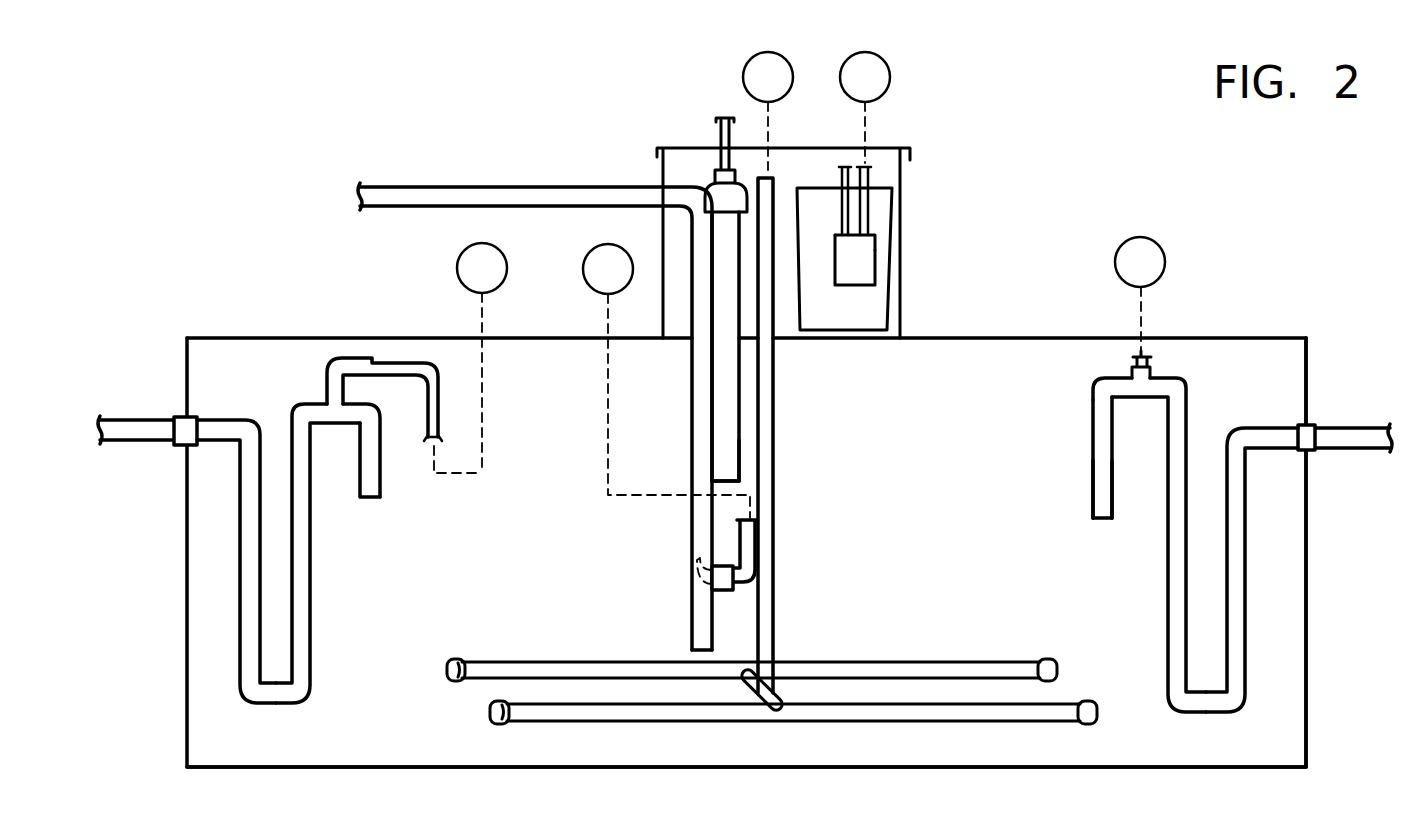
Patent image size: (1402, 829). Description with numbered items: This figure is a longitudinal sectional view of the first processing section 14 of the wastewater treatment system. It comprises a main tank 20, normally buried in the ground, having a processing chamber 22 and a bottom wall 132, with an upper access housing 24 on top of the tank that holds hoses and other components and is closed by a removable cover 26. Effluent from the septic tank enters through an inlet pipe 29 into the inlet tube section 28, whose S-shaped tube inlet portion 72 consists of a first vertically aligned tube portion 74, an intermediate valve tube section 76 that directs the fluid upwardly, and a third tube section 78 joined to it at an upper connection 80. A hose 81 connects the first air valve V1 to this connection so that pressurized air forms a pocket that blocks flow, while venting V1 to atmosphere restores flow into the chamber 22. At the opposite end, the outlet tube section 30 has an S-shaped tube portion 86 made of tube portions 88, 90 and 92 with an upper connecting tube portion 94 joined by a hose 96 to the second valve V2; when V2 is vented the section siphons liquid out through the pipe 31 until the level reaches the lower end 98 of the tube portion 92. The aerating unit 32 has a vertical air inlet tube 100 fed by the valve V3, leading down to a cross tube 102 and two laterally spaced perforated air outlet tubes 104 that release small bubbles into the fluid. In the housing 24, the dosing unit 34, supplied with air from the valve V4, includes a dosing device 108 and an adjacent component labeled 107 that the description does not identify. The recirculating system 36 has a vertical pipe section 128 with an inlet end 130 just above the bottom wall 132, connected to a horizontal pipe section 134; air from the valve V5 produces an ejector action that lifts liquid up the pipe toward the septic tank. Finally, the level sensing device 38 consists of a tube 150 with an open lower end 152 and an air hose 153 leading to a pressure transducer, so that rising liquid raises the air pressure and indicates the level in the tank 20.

The first processing section 14 is at (1250, 215).
The main tank 20 is at (1250, 330).
The processing chamber 22 is at (1262, 360).
The upper access housing 24 is at (900, 190).
The removable cover 26 is at (882, 148).
The inlet tube section 28 is at (318, 570).
The inlet pipe 29 is at (130, 425).
The outlet tube section 30 is at (1150, 567).
The pipe 31 is at (1347, 443).
The aerating unit 32 is at (852, 657).
The dosing unit 34 is at (892, 232).
The recirculating system 36 is at (685, 458).
The level sensing device 38 is at (745, 400).
The S-shaped tube inlet portion 72 is at (318, 600).
The first vertically aligned tube portion 74 is at (248, 584).
The intermediate valve tube section 76 is at (300, 640).
The third tube section 78 is at (373, 483).
The upper connection 80 is at (318, 396).
The hose 81 is at (438, 425).
The S-shaped tube portion 86 is at (1258, 553).
The tube portion 88 is at (1237, 596).
The tube portion 90 is at (1172, 610).
The inlet tube portion 92 is at (1096, 470).
The upper connecting tube portion 94 is at (1118, 382).
The hose 96 is at (1150, 355).
The lower end 98 is at (1100, 522).
The vertical air inlet tube 100 is at (768, 447).
The cross tube 102 is at (745, 692).
The air outlet tubes 104 is at (945, 712).
The sensor top 107 is at (893, 255).
The dosing device 108 is at (865, 272).
The vertical pipe section 128 is at (692, 362).
The inlet end 130 is at (690, 650).
The bottom wall 132 is at (803, 768).
The horizontal pipe section 134 is at (455, 188).
The tube 150 is at (725, 458).
The open lower end 152 is at (730, 484).
The air hose 153 is at (716, 130).
The first air valve V1 is at (482, 358).
The second valve V2 is at (1140, 294).
The valve V3 is at (768, 111).
The valve V4 is at (865, 107).
The valve V5 is at (666, 381).